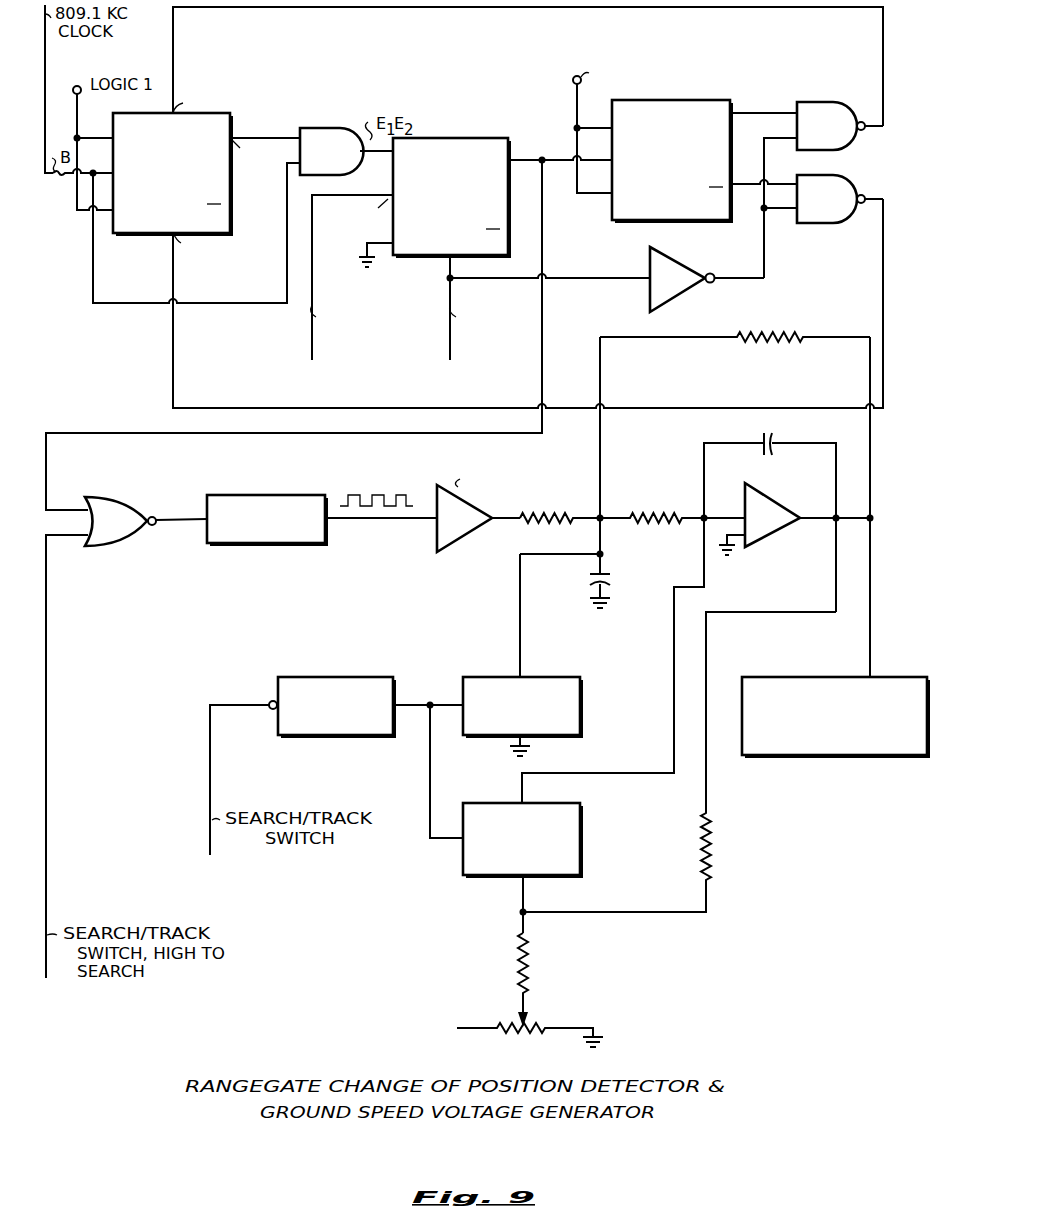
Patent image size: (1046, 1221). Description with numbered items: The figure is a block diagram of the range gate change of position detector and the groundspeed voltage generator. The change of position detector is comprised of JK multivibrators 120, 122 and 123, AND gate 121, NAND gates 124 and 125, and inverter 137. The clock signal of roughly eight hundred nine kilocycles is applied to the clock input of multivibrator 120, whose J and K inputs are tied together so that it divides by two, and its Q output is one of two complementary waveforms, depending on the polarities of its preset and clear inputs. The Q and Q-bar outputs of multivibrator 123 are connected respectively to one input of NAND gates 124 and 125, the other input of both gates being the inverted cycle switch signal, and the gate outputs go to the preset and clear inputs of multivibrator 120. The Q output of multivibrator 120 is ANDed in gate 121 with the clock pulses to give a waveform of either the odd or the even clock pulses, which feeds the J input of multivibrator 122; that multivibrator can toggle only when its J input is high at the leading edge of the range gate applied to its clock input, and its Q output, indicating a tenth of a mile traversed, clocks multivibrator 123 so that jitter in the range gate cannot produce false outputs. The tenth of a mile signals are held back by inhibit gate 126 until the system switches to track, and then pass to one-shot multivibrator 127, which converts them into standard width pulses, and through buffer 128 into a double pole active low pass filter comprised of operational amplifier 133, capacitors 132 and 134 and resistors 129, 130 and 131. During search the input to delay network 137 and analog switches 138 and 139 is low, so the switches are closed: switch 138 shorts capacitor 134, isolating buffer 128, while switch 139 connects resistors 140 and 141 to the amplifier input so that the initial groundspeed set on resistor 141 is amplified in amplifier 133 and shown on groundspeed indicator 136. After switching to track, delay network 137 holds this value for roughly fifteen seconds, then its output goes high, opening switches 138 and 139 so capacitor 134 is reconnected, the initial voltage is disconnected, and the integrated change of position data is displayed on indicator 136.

The JK multivibrator 120 is at (232, 118).
The AND gate 121 is at (346, 151).
The JK multivibrator 122 is at (490, 138).
The JK multivibrator 123 is at (696, 100).
The NAND gate 124 is at (822, 190).
The NAND gate 125 is at (840, 199).
The inhibit gate 126 is at (146, 521).
The one-shot multivibrator 127 is at (292, 495).
The buffer 128 is at (486, 510).
The resistor 129 is at (556, 512).
The resistor 130 is at (660, 508).
The resistor 131 is at (786, 332).
The capacitor 132 is at (770, 440).
The operational amplifier 133 is at (794, 519).
The capacitor 134 is at (608, 578).
The groundspeed indicator 136 is at (890, 677).
The delay network 137 is at (378, 677).
The analog switch 138 is at (567, 677).
The analog switch 139 is at (567, 803).
The resistor 140 is at (530, 962).
The resistor 141 is at (546, 1022).